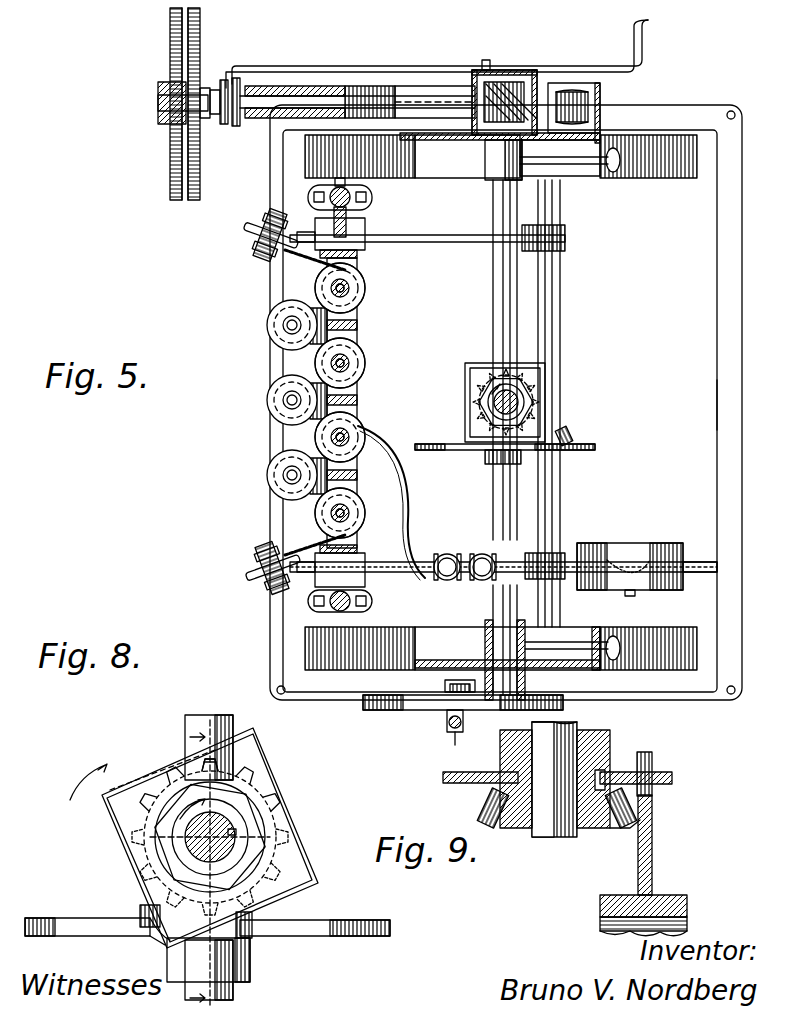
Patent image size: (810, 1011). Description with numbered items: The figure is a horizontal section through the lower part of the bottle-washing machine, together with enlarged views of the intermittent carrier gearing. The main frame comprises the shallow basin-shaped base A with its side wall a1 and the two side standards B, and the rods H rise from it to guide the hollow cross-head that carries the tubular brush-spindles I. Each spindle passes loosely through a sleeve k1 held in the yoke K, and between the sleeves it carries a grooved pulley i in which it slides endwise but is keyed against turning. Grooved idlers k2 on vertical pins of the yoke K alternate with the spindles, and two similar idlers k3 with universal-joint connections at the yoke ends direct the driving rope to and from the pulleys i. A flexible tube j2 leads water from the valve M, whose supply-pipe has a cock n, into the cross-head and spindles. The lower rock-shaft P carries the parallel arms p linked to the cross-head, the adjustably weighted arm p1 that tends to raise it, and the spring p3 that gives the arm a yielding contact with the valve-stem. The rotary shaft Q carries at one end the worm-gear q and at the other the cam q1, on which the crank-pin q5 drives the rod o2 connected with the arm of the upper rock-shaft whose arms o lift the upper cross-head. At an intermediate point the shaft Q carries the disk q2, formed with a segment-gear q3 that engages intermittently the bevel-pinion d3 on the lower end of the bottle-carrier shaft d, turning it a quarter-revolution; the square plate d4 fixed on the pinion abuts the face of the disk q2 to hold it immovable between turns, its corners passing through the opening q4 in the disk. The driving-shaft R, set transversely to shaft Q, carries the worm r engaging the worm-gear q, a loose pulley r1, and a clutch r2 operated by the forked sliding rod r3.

In FIG. 5, the base A is at (506, 402).
In FIG. 5, the frame side wall a1 is at (716, 400).
In FIG. 5, the side standards B is at (501, 401).
In FIG. 5, the rods H is at (352, 196).
In FIG. 5, the brush-spindles I is at (333, 285).
In FIG. 5, the yoke K is at (358, 325).
In FIG. 5, the sleeve k1 is at (345, 286).
In FIG. 5, the grooved idlers k2 is at (270, 324).
In FIG. 5, the idlers k3 is at (258, 238).
In FIG. 5, the grooved pulleys i is at (366, 290).
In FIG. 5, the flexible tube j2 is at (412, 502).
In FIG. 5, the valve M is at (448, 554).
In FIG. 5, the cock n is at (483, 554).
In FIG. 5, the rock-shaft P is at (561, 316).
In FIG. 5, the arms p is at (416, 234).
In FIG. 5, the weighted arm p1 is at (700, 560).
In FIG. 5, the spring p3 is at (445, 688).
In FIG. 5, the rotary shaft Q is at (492, 280).
In FIG. 8, the rotary shaft Q is at (186, 726).
In FIG. 5, the worm-gear q is at (600, 100).
In FIG. 5, the cam q1 is at (380, 714).
In FIG. 5, the disk q2 is at (470, 450).
In FIG. 8, the disk q2 is at (296, 935).
In FIG. 9, the disk q2 is at (654, 846).
In FIG. 5, the segment-gear q3 is at (570, 430).
In FIG. 8, the segment-gear q3 is at (140, 912).
In FIG. 9, the segment-gear q3 is at (626, 832).
In FIG. 8, the opening q4 is at (160, 940).
In FIG. 9, the opening q4 is at (648, 762).
In FIG. 5, the crank-pin q5 is at (463, 724).
In FIG. 5, the rod o2 is at (448, 725).
In FIG. 8, the arms o is at (210, 730).
In FIG. 5, the driving-shaft R is at (312, 98).
In FIG. 5, the worm r is at (515, 88).
In FIG. 5, the pulley r1 is at (172, 188).
In FIG. 5, the clutch r2 is at (232, 124).
In FIG. 5, the forked sliding rod r3 is at (404, 70).
In FIG. 5, the bottle-carrier shaft d is at (494, 403).
In FIG. 8, the bottle-carrier shaft d is at (186, 834).
In FIG. 9, the bottle-carrier shaft d is at (548, 838).
In FIG. 8, the bevel-pinion d3 is at (175, 765).
In FIG. 9, the bevel-pinion d3 is at (512, 828).
In FIG. 5, the polygonal plate d4 is at (503, 389).
In FIG. 8, the polygonal plate d4 is at (255, 760).
In FIG. 9, the polygonal plate d4 is at (447, 785).